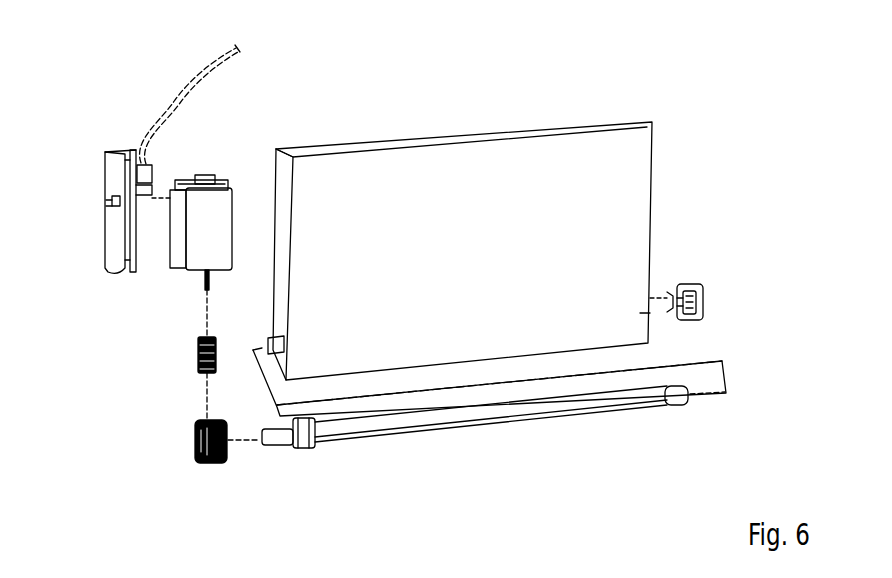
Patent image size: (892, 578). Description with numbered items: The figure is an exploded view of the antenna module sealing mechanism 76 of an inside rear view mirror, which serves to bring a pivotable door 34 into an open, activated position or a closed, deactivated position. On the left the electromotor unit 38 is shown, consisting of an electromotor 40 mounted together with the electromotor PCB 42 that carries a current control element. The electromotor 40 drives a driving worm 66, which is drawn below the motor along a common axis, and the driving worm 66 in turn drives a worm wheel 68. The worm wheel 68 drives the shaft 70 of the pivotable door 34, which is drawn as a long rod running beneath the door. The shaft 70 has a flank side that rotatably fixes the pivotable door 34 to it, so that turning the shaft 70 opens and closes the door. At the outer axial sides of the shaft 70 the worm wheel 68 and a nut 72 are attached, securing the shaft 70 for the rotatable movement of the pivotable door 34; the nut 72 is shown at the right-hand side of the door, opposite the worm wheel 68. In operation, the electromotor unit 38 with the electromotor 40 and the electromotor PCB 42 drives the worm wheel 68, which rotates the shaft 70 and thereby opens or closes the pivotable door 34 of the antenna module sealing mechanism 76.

The pivotable door 34 is at (488, 276).
The electromotor unit 38 is at (207, 138).
The electromotor 40 is at (222, 246).
The electromotor PCB 42 is at (105, 228).
The driving worm 66 is at (197, 362).
The worm wheel 68 is at (193, 440).
The shaft 70 is at (537, 412).
The nut 72 is at (703, 292).
The antenna module sealing mechanism 76 is at (706, 146).